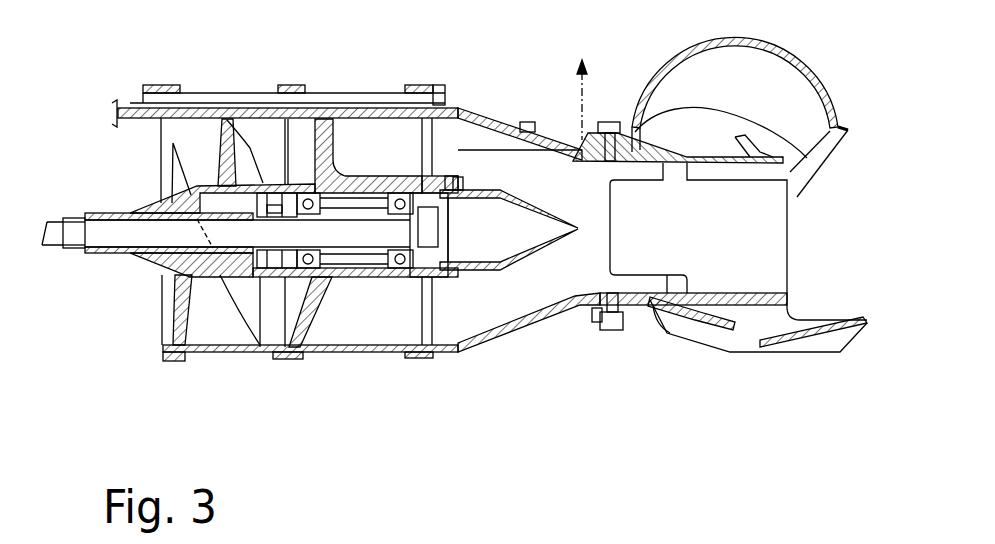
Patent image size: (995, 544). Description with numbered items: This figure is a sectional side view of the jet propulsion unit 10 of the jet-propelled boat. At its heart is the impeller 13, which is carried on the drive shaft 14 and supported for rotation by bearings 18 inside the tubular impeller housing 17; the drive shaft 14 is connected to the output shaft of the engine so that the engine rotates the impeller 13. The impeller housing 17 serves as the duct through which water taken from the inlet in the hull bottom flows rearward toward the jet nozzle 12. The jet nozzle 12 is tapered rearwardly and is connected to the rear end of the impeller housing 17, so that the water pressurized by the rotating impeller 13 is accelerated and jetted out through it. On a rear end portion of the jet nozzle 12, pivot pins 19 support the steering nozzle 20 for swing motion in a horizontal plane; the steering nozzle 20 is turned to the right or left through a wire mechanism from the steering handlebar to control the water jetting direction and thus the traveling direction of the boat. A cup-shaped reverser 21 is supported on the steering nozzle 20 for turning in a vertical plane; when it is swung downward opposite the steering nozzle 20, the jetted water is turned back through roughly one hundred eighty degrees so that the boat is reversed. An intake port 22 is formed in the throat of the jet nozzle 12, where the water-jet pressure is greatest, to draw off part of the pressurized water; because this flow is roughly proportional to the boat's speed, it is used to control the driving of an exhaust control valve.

The jet propulsion unit 10 is at (478, 93).
The jet nozzle 12 is at (537, 320).
The impeller 13 is at (258, 146).
The drive shaft 14 is at (50, 249).
The impeller housing 17 is at (383, 353).
The bearings 18 is at (316, 263).
The pivot pins 19 is at (614, 130).
The steering nozzle 20 is at (772, 293).
The reverser 21 is at (803, 68).
The intake port 22 is at (592, 118).